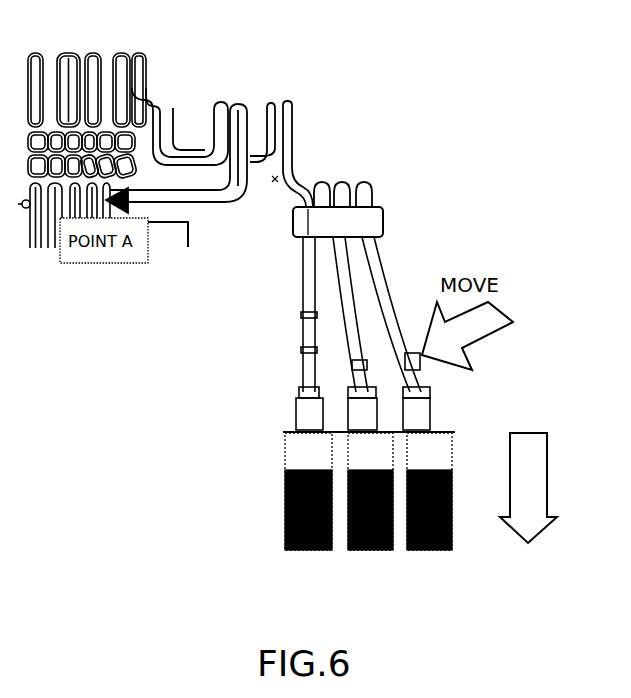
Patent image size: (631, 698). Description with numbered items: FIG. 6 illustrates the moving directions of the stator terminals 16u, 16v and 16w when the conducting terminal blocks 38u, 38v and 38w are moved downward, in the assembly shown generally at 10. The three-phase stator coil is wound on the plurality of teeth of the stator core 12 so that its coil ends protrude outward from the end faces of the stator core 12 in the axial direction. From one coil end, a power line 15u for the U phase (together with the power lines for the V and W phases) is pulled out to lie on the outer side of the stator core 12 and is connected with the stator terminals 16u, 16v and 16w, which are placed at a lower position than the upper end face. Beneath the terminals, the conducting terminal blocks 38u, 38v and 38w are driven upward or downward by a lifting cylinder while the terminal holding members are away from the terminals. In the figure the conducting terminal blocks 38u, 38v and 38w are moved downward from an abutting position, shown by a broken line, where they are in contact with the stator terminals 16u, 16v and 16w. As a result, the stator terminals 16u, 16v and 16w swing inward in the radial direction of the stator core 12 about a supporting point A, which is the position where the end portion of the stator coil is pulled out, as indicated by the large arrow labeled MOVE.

The rotating electric machine 10 is at (232, 69).
The stator core 12 is at (166, 238).
The power line 15u is at (239, 135).
The stator terminal 16u is at (290, 428).
The stator terminal 16v is at (352, 427).
The stator terminal 16w is at (413, 412).
The conducting terminal block 38u is at (297, 552).
The conducting terminal block 38v is at (362, 552).
The conducting terminal block 38w is at (427, 552).